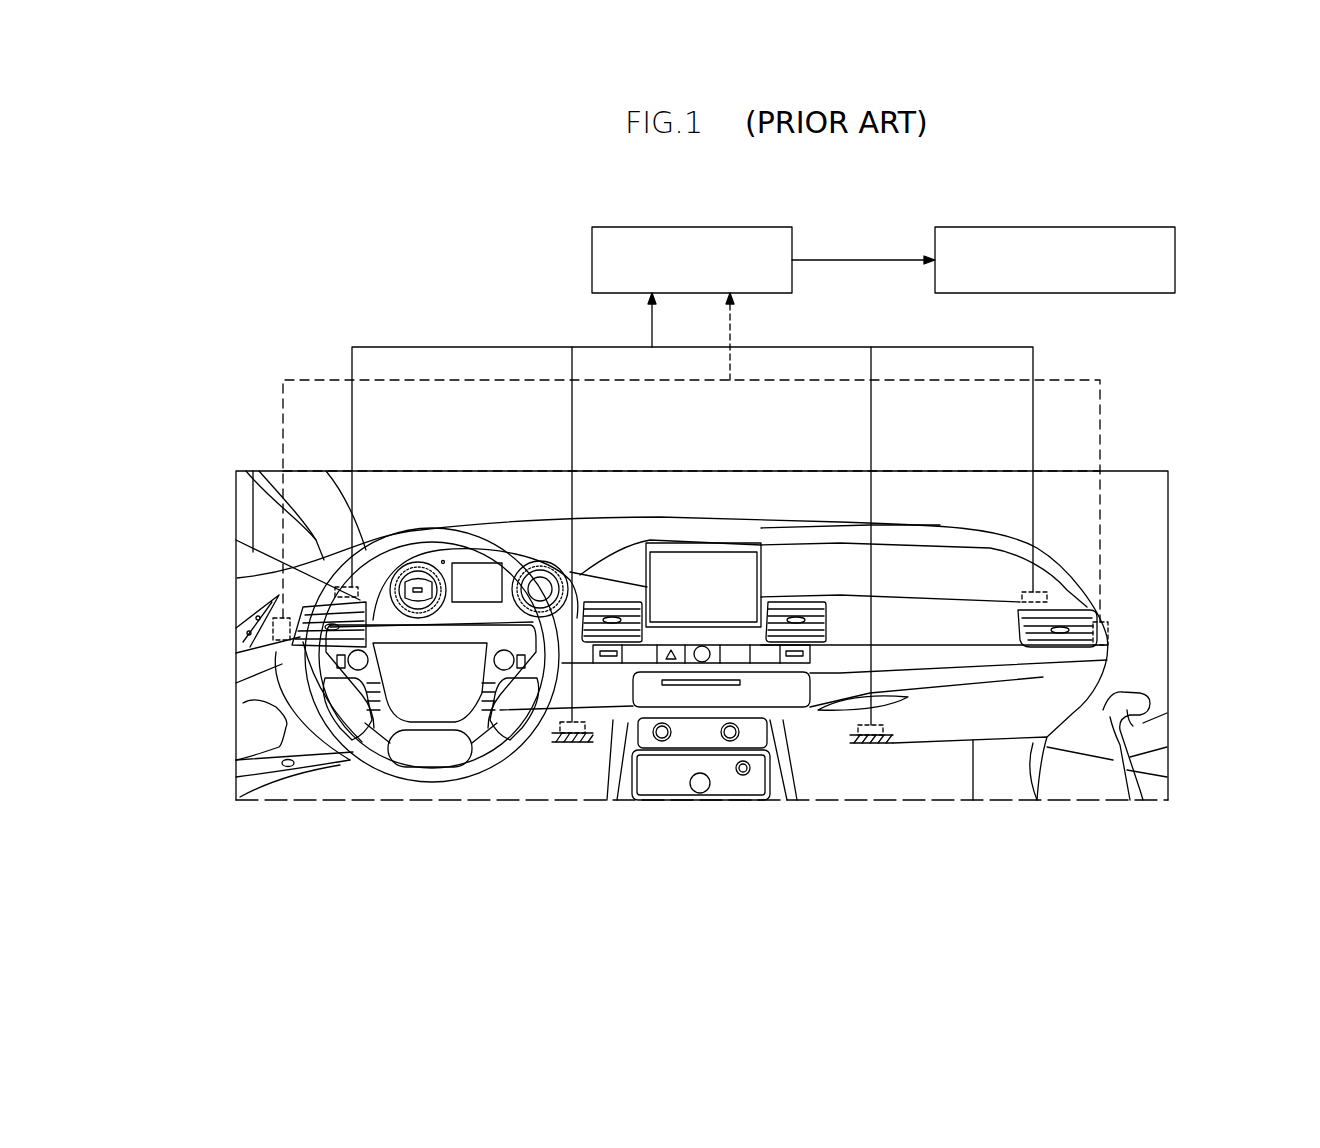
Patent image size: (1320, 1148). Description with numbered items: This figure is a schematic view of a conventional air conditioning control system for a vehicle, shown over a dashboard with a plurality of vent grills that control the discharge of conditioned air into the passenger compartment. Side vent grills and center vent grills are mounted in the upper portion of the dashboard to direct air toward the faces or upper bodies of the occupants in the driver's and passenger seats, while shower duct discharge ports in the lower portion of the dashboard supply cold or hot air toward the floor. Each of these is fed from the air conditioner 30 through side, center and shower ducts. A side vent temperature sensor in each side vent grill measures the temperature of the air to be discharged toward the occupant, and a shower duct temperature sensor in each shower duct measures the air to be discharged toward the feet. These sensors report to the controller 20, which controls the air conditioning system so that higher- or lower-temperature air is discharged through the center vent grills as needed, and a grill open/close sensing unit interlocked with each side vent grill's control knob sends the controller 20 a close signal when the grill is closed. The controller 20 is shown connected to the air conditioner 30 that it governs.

The controller 20 is at (792, 243).
The air conditioner 30 is at (1175, 243).